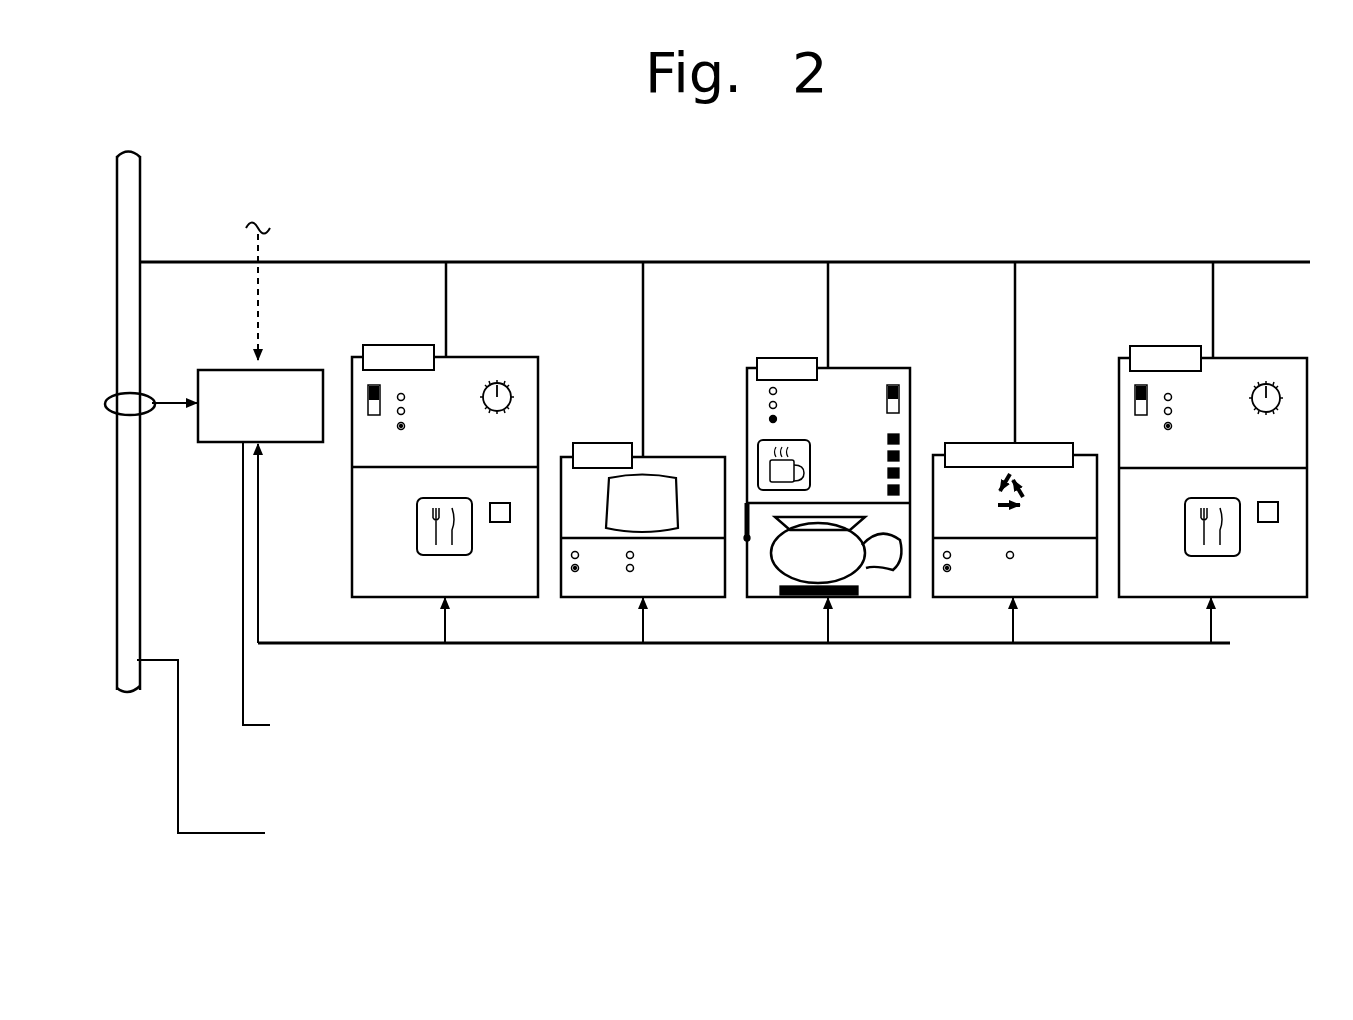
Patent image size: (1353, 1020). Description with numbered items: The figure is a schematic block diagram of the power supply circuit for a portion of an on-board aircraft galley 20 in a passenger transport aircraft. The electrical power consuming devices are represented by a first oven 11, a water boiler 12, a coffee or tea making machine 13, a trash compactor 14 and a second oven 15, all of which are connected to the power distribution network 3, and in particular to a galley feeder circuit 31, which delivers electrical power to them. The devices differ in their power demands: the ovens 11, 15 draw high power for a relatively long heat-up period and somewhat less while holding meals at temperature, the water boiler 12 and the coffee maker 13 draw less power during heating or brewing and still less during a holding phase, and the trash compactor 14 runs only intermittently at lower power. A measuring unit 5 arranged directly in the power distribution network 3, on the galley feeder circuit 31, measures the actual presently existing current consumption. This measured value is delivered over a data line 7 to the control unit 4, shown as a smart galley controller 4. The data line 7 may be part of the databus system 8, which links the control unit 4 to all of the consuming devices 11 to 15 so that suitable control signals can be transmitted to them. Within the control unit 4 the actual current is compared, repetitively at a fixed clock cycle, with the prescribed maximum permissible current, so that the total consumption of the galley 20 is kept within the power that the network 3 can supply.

The power distribution network 3 is at (748, 258).
The control unit 4 is at (272, 370).
The measuring unit 5 is at (143, 413).
The data line 7 is at (178, 403).
The databus system 8 is at (502, 648).
The oven 11 is at (478, 368).
The water boiler 12 is at (688, 468).
The coffee or tea making machine 13 is at (863, 395).
The trash compactor 14 is at (1085, 479).
The oven 15 is at (1237, 382).
The on-board aircraft galley 20 is at (1112, 233).
The galley feeder circuit 31 is at (128, 248).